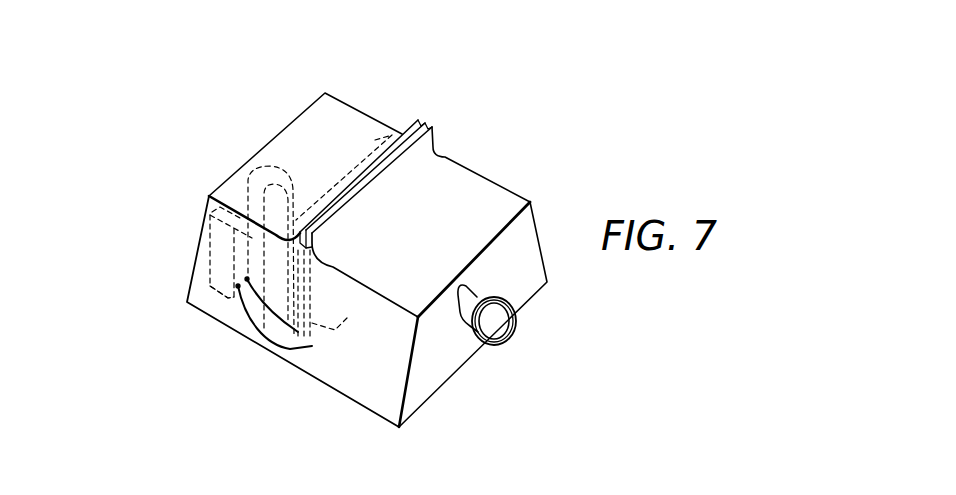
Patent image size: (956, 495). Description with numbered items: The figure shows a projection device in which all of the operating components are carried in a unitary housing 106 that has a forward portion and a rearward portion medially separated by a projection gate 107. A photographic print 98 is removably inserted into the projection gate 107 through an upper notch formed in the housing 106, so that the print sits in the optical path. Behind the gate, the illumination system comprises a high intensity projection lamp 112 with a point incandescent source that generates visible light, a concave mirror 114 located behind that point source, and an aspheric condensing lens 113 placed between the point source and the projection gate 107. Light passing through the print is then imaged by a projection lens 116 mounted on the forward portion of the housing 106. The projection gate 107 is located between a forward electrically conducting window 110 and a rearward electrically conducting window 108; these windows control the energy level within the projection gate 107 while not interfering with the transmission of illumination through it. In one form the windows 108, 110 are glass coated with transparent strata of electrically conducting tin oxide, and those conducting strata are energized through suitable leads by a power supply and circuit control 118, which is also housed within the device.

The photographic print 98 is at (425, 122).
The unitary housing 106 is at (473, 172).
The projection gate 107 is at (388, 165).
The rearward electrically conducting window 108 is at (305, 297).
The forward electrically conducting window 110 is at (336, 331).
The high intensity projection lamp 112 is at (295, 182).
The aspheric condensing lens 113 is at (375, 140).
The concave mirror 114 is at (252, 168).
The projection lens 116 is at (512, 330).
The power supply and circuit control 118 is at (210, 300).